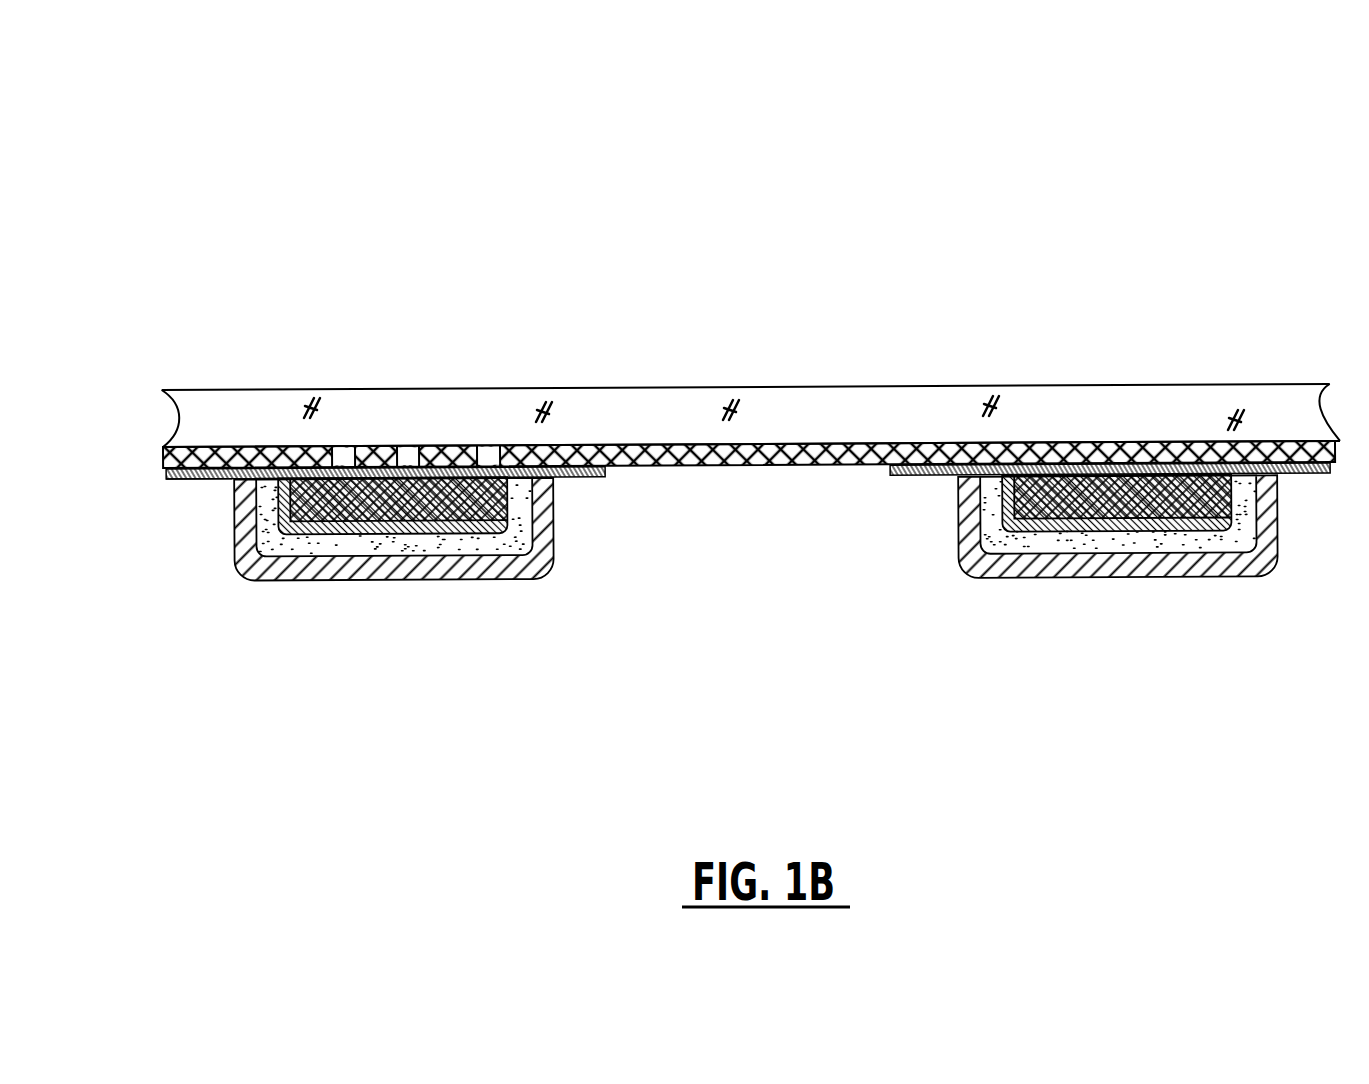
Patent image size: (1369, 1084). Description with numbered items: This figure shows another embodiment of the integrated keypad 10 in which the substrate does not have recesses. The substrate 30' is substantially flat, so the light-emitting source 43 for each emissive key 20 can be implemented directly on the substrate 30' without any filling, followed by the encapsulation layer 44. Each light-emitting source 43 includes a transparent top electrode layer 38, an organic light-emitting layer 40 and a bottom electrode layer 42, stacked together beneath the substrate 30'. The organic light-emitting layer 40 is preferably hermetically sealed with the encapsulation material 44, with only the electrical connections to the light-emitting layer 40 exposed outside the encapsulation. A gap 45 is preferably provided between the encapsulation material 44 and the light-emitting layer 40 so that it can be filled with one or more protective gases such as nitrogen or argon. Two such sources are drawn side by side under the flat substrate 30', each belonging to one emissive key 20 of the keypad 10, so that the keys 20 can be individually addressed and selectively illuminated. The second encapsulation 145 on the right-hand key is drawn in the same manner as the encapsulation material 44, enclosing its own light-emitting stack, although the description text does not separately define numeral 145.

The integrated keypad 10 is at (810, 238).
The emissive key 20 is at (749, 430).
The substrate 30' is at (751, 351).
The top electrode layer 38 is at (585, 482).
The light-emitting layer 40 is at (305, 533).
The bottom electrode layer 42 is at (177, 480).
The light-emitting source 43 is at (582, 545).
The encapsulation material 44 is at (390, 565).
The gap 45 is at (512, 540).
The encapsulant cup 145 is at (1032, 542).